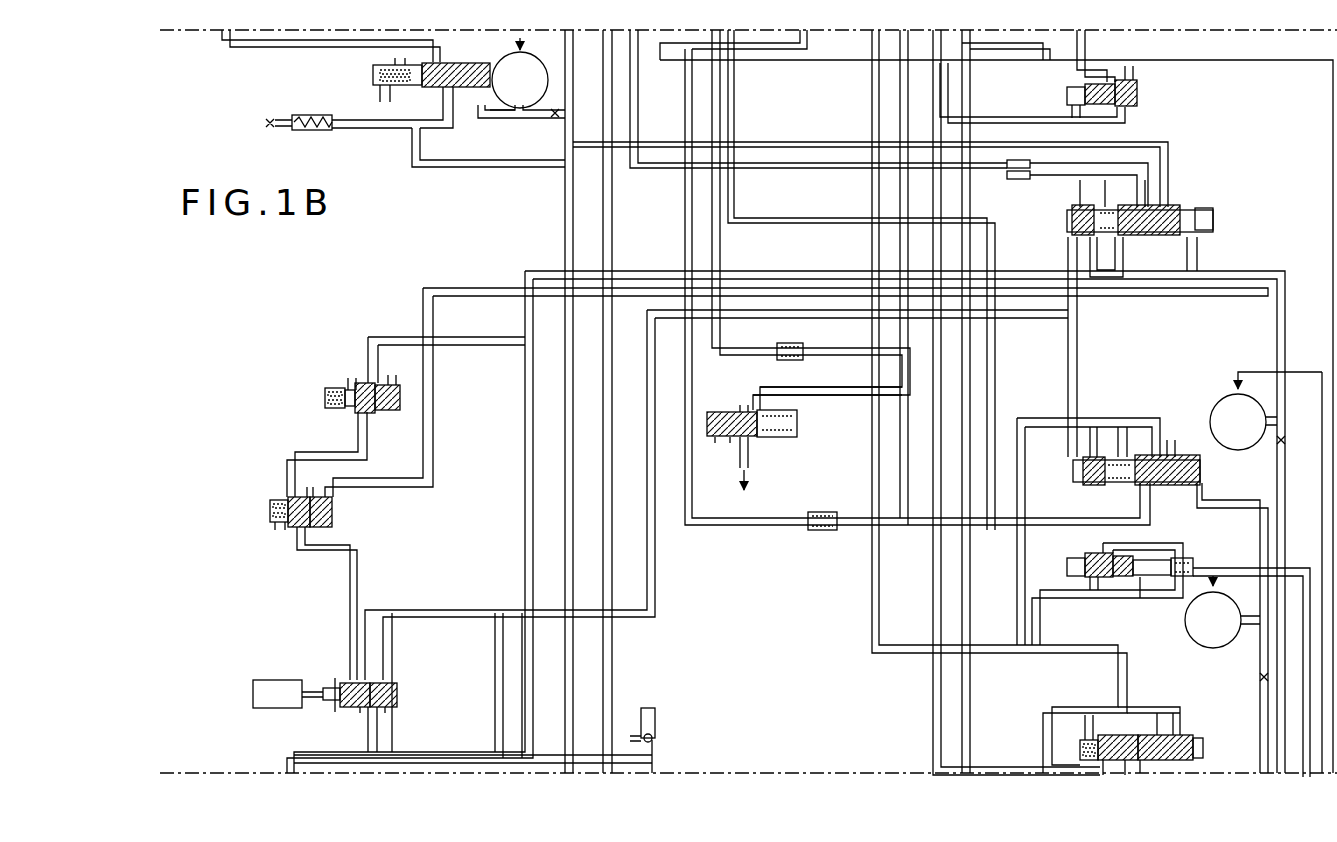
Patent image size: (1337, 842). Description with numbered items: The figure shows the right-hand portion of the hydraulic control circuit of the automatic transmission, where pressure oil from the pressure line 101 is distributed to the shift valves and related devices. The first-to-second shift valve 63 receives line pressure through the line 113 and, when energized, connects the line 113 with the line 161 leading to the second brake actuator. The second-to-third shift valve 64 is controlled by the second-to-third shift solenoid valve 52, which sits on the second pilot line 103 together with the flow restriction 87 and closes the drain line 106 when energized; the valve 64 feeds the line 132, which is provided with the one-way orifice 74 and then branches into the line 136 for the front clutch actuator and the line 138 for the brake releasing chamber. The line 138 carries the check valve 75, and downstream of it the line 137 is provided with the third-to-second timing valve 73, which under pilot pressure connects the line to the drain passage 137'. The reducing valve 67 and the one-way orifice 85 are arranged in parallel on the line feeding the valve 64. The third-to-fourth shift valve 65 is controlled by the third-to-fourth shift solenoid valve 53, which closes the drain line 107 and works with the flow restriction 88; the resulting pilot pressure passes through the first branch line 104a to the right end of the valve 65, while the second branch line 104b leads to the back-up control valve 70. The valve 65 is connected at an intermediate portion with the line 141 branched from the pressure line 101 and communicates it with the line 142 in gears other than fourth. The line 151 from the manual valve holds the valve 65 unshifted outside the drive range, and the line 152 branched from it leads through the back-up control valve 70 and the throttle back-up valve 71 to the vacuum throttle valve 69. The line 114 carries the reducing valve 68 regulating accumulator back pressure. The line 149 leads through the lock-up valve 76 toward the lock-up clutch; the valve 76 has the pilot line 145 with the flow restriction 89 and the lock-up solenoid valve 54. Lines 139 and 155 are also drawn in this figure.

The lock-up valve 76 is at (373, 70).
The lock-up solenoid valve 54 is at (497, 100).
The flow restriction 89 is at (553, 118).
The pilot line 145 is at (503, 122).
The pressure line 101 is at (573, 660).
The line 149 is at (612, 222).
The line 141 is at (820, 140).
The line 142 is at (778, 170).
The line 136 is at (765, 50).
The one-way orifice 74 is at (812, 530).
The line 138 is at (811, 220).
The check valve 75 is at (803, 342).
The line 137 is at (827, 416).
The 3-2 timing valve 73 is at (745, 410).
The drain passage 137' is at (785, 465).
The hydraulic line 139 is at (997, 382).
The line 161 is at (880, 655).
The line 132 is at (905, 528).
The line 113 is at (935, 762).
The line 114 is at (1010, 117).
The reducing valve 68 is at (1137, 92).
The 3-4 shift valve 65 is at (1185, 208).
The first branch line 104a is at (1262, 268).
The second branch line 104b is at (1180, 298).
The line 151 is at (520, 450).
The line 152 is at (480, 345).
The throttle back-up valve 71 is at (392, 412).
The back-up control valve 70 is at (332, 512).
The hydraulic line 155 is at (453, 610).
The vacuum throttle valve 69 is at (397, 690).
The 2-3 shift valve 64 is at (1182, 455).
The second pilot line 103 is at (1258, 733).
The 3-4 shift solenoid valve 53 is at (1215, 402).
The drain line 107 is at (1262, 442).
The flow restriction 88 is at (1272, 452).
The reducing valve 67 is at (1127, 590).
The one-way orifice 85 is at (1195, 566).
The 2-3 shift solenoid valve 52 is at (1186, 620).
The drain line 106 is at (1222, 645).
The flow restriction 87 is at (1262, 677).
The 1-2 shift valve 63 is at (1180, 735).